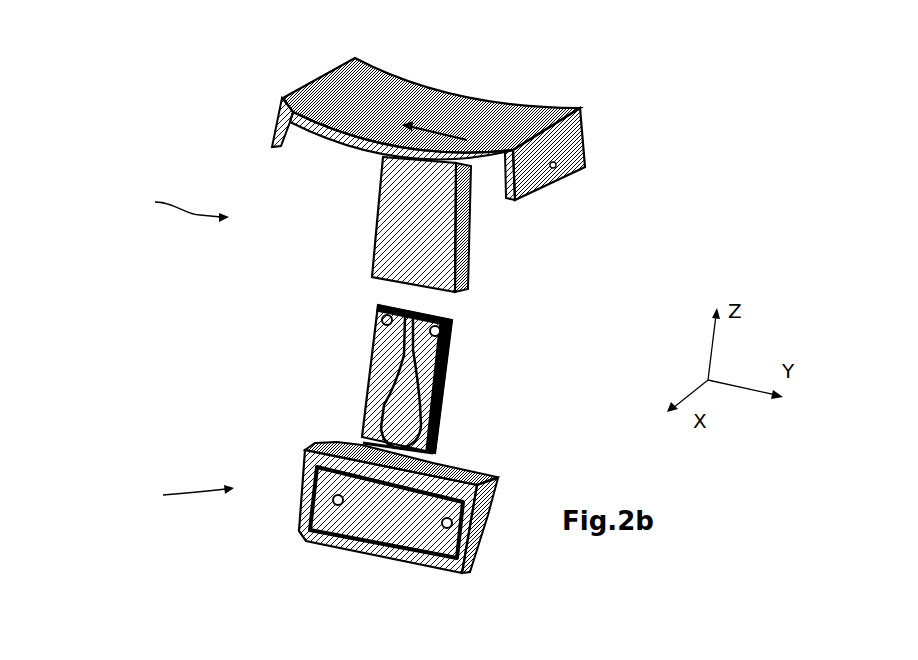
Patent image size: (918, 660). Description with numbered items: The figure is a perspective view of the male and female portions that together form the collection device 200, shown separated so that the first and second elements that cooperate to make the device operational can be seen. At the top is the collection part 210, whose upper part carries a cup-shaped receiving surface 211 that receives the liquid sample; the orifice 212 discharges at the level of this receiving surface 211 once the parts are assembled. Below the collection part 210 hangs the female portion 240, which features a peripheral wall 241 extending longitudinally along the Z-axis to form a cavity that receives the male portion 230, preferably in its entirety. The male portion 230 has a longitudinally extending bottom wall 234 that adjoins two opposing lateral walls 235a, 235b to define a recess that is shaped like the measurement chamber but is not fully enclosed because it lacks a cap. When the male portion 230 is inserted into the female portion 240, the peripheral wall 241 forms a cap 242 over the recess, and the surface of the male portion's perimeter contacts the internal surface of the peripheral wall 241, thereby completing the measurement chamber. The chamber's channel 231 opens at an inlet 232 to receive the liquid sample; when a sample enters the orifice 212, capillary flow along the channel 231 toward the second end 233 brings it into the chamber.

The collection device 200 is at (187, 98).
The collection part 210 is at (307, 84).
The receiving surface 211 is at (427, 103).
The orifice 212 is at (440, 130).
The female portion 240 is at (296, 247).
The peripheral wall 241 is at (395, 181).
The cap 242 is at (428, 243).
The male portion 230 is at (322, 367).
The channel 231 is at (402, 341).
The inlet 232 is at (420, 307).
The second end 233 is at (438, 437).
The bottom wall 234 is at (403, 407).
The lateral wall 235a is at (403, 407).
The lateral wall 235b is at (420, 381).